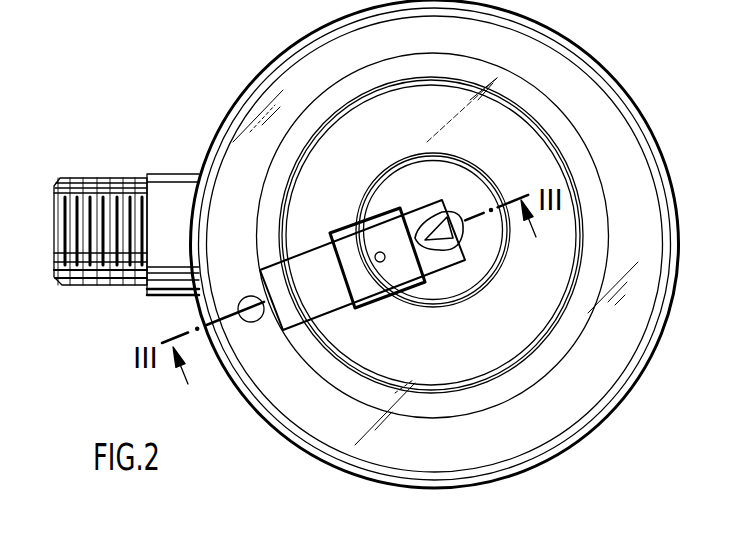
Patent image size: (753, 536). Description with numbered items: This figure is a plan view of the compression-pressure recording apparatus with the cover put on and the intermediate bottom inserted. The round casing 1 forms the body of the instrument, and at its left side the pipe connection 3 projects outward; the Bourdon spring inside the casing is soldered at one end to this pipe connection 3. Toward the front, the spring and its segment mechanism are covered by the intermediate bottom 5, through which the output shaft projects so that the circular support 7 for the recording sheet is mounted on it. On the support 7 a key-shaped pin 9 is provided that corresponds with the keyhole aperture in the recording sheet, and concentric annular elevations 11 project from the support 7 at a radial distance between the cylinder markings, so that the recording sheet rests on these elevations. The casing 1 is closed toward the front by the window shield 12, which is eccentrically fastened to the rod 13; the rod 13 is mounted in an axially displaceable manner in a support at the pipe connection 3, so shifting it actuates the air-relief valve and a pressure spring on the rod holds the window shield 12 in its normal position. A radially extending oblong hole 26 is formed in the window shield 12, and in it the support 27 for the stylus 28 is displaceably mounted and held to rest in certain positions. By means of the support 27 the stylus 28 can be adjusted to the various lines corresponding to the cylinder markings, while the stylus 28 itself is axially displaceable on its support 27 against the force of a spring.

The casing 1 is at (603, 412).
The pipe connection 3 is at (178, 197).
The intermediate bottom 5 is at (563, 423).
The circular support 7 is at (457, 416).
The key-shaped pin 9 is at (440, 228).
The concentric annular elevations 11 is at (538, 132).
The window shield 12 is at (270, 90).
The rod 13 is at (258, 322).
The radially extending oblong hole 26 is at (327, 310).
The support 27 is at (378, 296).
The stylus 28 is at (376, 253).